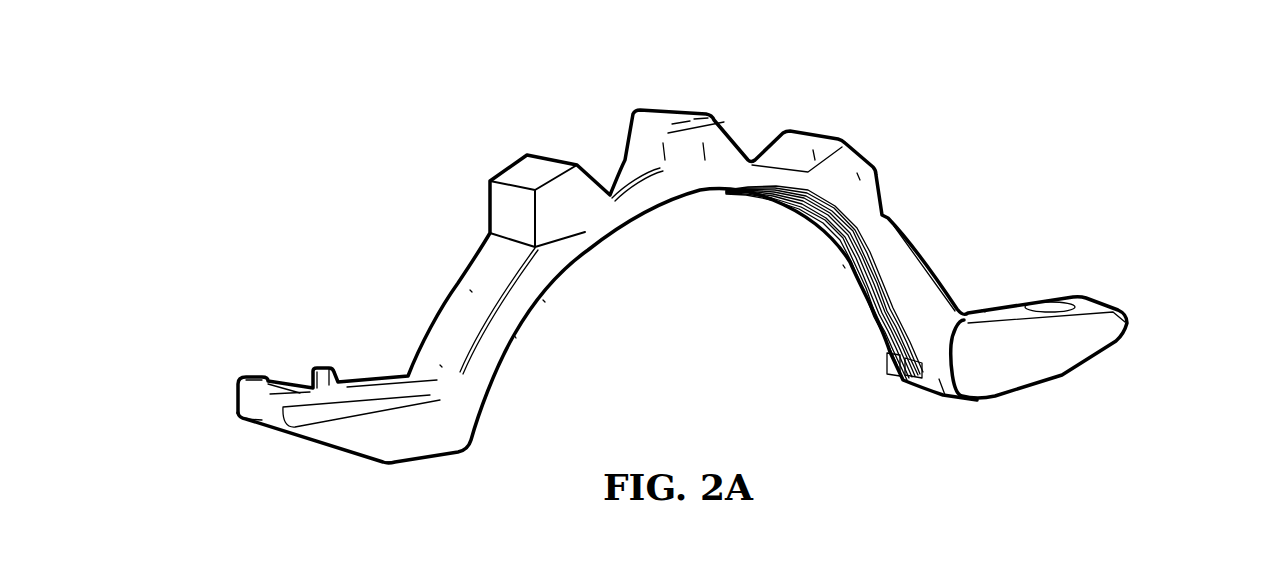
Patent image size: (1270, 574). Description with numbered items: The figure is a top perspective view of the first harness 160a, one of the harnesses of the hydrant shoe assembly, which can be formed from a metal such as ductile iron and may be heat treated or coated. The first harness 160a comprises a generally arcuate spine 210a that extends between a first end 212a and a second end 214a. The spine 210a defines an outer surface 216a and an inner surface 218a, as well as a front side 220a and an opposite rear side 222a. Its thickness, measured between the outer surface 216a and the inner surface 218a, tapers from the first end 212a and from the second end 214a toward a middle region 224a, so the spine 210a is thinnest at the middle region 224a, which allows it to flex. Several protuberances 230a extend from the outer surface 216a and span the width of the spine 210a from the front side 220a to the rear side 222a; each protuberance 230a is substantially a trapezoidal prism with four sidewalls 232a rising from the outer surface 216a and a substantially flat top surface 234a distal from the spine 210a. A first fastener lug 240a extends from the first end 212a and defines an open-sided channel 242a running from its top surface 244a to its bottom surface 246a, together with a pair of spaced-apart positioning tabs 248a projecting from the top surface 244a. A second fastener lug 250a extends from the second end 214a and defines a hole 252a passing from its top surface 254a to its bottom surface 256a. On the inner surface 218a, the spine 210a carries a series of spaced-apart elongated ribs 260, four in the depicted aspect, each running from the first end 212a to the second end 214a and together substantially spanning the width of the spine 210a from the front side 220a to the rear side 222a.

The first harness 160a is at (245, 215).
The spine 210a is at (521, 363).
The first end 212a is at (440, 365).
The second end 214a is at (962, 355).
The outer surface 216a is at (470, 290).
The inner surface 218a is at (843, 265).
The front side 220a is at (543, 300).
The rear side 222a is at (488, 258).
The middle region 224a is at (615, 158).
The protuberances 230a is at (560, 155).
The sidewalls 232a is at (857, 173).
The top surface 234a is at (538, 175).
The first fastener lug 240a is at (305, 470).
The open-sided channel 242a is at (273, 412).
The top surface 244a is at (385, 380).
The bottom surface 246a is at (383, 467).
The positioning tabs 248a is at (320, 377).
The second fastener lug 250a is at (1140, 317).
The hole 252a is at (1047, 297).
The top surface 254a is at (982, 310).
The bottom surface 256a is at (1055, 378).
The elongated ribs 260 is at (913, 378).